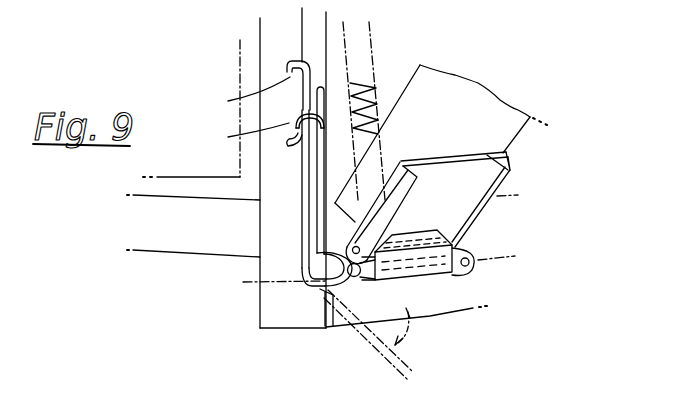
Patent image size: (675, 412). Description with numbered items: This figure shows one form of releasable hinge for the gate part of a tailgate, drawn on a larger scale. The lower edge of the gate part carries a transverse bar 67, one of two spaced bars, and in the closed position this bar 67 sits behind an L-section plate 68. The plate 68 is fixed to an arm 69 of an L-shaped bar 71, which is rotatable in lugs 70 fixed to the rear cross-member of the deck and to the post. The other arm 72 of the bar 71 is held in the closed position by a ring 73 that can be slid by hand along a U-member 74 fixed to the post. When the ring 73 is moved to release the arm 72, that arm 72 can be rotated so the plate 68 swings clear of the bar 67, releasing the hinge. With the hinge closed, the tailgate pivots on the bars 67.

The transverse bar 67 is at (448, 236).
The L-section plate 68 is at (432, 257).
The arm 69 is at (358, 279).
The lug 70 is at (477, 250).
The L-shaped bar 71 is at (309, 178).
The arm 72 is at (306, 210).
The ring 73 is at (292, 124).
The U-member 74 is at (289, 81).